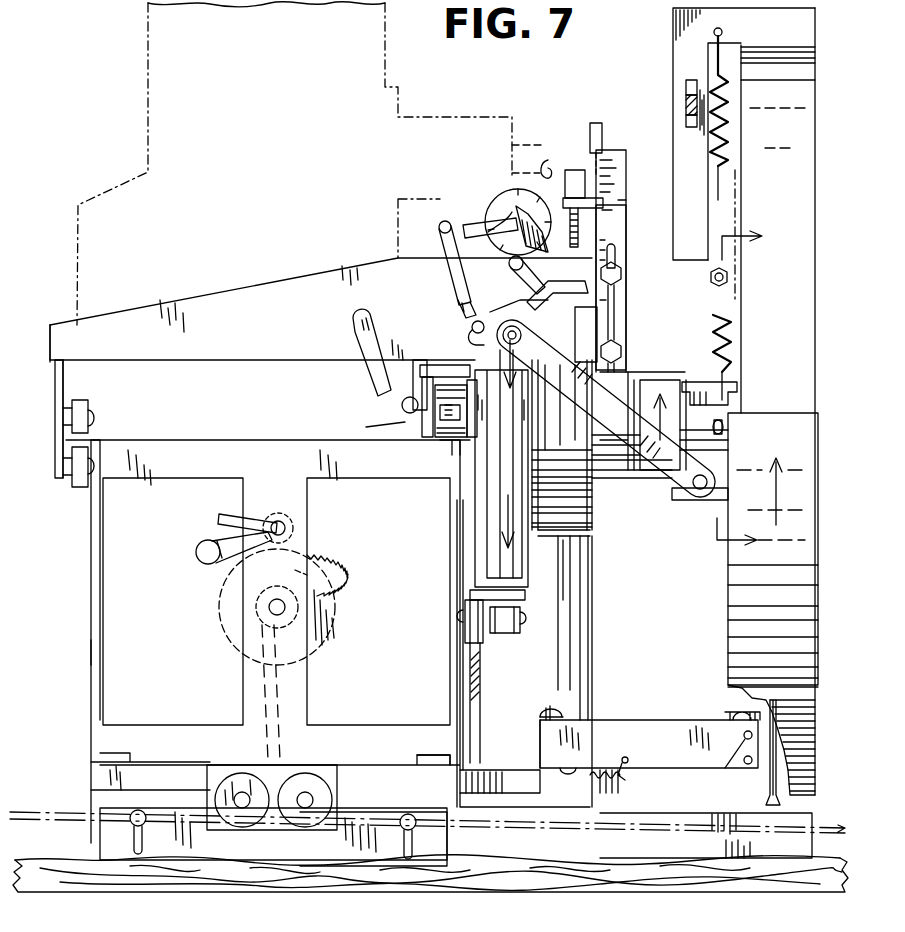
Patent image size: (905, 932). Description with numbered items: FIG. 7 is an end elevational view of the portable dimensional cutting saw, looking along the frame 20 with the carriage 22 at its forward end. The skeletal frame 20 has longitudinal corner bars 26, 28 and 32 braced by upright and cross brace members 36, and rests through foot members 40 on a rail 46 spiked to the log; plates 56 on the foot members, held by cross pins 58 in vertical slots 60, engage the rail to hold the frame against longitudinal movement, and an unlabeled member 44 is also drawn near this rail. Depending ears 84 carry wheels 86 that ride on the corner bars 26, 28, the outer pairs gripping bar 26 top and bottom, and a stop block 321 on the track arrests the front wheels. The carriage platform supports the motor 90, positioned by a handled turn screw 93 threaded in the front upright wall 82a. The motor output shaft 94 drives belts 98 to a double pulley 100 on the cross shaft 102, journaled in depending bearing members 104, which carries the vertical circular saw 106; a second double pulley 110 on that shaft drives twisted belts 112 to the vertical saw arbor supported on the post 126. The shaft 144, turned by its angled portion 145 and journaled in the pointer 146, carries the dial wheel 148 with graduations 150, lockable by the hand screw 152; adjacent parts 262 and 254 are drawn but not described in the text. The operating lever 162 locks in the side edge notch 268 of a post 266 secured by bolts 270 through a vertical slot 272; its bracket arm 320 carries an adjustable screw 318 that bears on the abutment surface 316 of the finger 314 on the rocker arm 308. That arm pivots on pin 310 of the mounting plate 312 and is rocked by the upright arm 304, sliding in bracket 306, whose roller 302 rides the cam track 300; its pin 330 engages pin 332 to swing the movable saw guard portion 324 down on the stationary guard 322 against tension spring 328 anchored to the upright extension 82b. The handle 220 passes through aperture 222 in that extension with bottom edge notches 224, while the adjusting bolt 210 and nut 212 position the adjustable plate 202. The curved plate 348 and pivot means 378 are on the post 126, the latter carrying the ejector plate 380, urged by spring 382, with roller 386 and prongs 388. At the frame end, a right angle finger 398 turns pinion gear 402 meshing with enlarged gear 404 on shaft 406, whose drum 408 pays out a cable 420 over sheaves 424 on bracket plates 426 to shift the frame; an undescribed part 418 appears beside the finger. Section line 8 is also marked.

The section line 8- 8 is at (739, 388).
The frame 20 is at (79, 657).
The carriage 22 is at (44, 318).
The corner bar 26 is at (106, 462).
The corner bar 28 is at (445, 440).
The corner bar 32 is at (438, 755).
The upright and cross brace members 36 is at (110, 490).
The foot members 40 is at (100, 780).
The rail 44 is at (658, 825).
The rail 46 is at (575, 880).
The plates 56 is at (112, 845).
The cross pins 58 is at (413, 835).
The slots 60 is at (138, 850).
The front upright wall 82a is at (342, 280).
The upright extension 82b is at (685, 52).
The depending ears 84 is at (55, 388).
The wheels 86 is at (95, 455).
The motor 90 is at (148, 42).
The handled turn screw 93 is at (378, 388).
The output shaft 94 is at (528, 145).
The belts 98 is at (560, 532).
The double pulley 100 is at (588, 520).
The cross shaft 102 is at (684, 430).
The bearing members 104 is at (495, 410).
The circular saw 106 is at (770, 780).
The double pulley 110 is at (652, 475).
The drive belts 112 is at (665, 380).
The post 126 is at (582, 602).
The shaft 144 is at (525, 197).
The angled portion 145 is at (445, 222).
The pointer 146 is at (508, 240).
The dial wheel 148 is at (500, 210).
The graduations 150 is at (498, 214).
The hand screw 152 is at (516, 270).
The lever 162 is at (593, 155).
The adjustable plate 202 is at (243, 830).
The adjusting bolt 210 is at (712, 283).
The nut 212 is at (710, 274).
The handle 220 is at (686, 105).
The aperture 222 is at (686, 86).
The bottom edge notches 224 is at (686, 122).
The lever foot 254 is at (462, 303).
The lever 262 is at (445, 232).
The post 266 is at (606, 213).
The side edge notch 268 is at (604, 192).
The bolts 270 is at (620, 270).
The vertical slot 272 is at (614, 248).
The cam track 300 is at (478, 740).
The roller 302 is at (480, 648).
The upright arm 304 is at (505, 561).
The bracket 306 is at (466, 463).
The rocker arm 308 is at (626, 400).
The pivot pin 310 is at (572, 355).
The mounting plate 312 is at (590, 340).
The abutment finger 314 is at (525, 300).
The abutment surface 316 is at (578, 282).
The adjustable screw 318 is at (575, 172).
The bracket arm 320 is at (552, 162).
The stop block 321 is at (445, 440).
The stationary saw guard portion 322 is at (800, 198).
The movable saw guard portion 324 is at (748, 598).
The tension spring 328 is at (712, 155).
The projecting pin 330 is at (700, 492).
The projecting pin 332 is at (676, 500).
The curved plate 348 is at (490, 785).
The pivot means 378 is at (545, 713).
The ejector plate 380 is at (653, 735).
The spring 382 is at (606, 780).
The roller 386 is at (732, 716).
The prongs 388 is at (738, 768).
The right angle finger 398 is at (222, 518).
The pinion gear 402 is at (297, 527).
The enlarged gear 404 is at (338, 596).
The shaft 406 is at (275, 605).
The drum 408 is at (310, 575).
The roller 418 is at (215, 543).
The cable 420 is at (690, 828).
The sheaves 424 is at (300, 830).
The bracket plates 426 is at (230, 825).